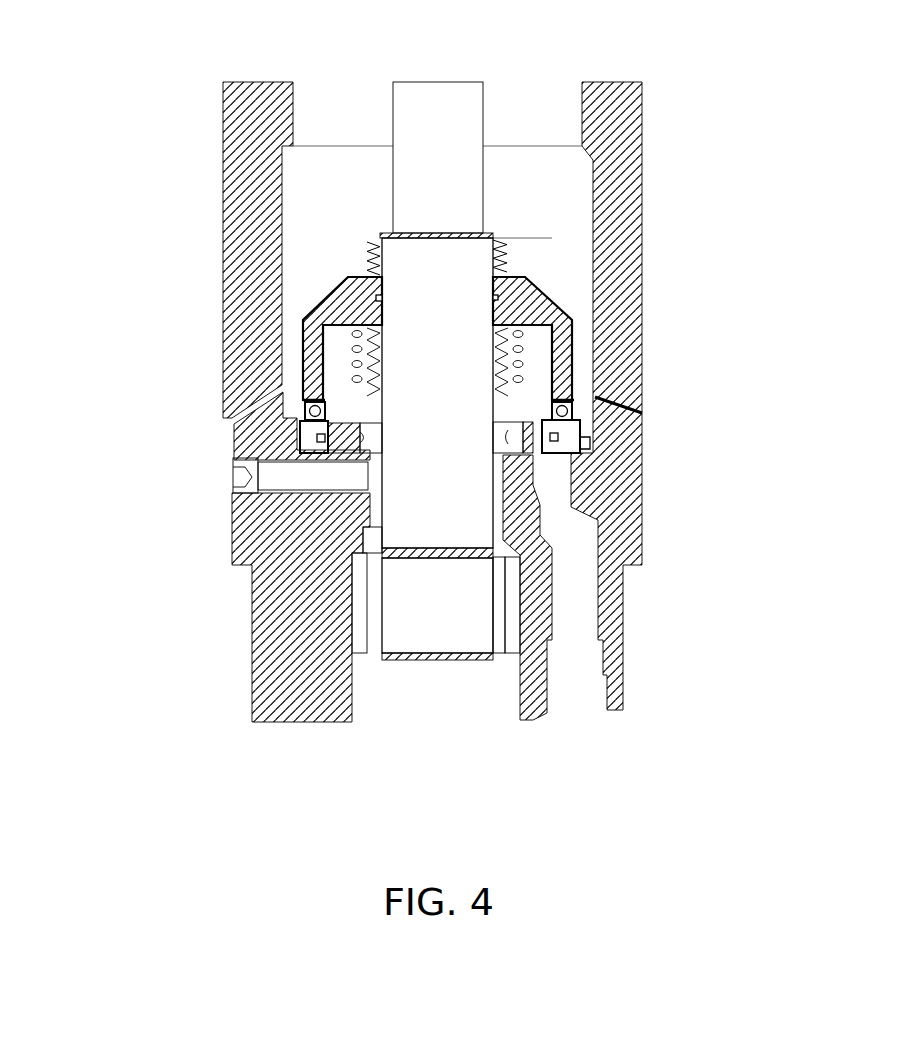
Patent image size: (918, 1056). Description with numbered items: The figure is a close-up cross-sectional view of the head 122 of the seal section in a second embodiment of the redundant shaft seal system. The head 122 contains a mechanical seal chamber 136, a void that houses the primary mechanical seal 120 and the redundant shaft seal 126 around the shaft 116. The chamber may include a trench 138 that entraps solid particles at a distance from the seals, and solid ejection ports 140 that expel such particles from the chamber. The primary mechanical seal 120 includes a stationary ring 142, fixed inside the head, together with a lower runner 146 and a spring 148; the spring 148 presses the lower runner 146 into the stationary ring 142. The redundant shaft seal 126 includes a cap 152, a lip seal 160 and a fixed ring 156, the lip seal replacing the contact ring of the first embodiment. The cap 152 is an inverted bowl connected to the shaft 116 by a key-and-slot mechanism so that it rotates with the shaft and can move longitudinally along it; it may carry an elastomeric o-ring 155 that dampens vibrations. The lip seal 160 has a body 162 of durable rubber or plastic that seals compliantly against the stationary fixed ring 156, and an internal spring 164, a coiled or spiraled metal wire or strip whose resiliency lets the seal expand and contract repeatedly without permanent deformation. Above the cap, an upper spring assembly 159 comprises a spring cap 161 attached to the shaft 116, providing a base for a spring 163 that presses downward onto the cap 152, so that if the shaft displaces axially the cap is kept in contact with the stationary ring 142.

The shaft 116 is at (440, 115).
The primary mechanical seal 120 is at (577, 398).
The head 122 is at (692, 218).
The redundant shaft seal 126 is at (562, 298).
The mechanical seal chamber 136 is at (535, 175).
The trench 138 is at (590, 443).
The solid ejection ports 140 is at (617, 407).
The stationary ring 142 is at (378, 450).
The lower runner 146 is at (372, 413).
The spring 148 is at (357, 380).
The cap 152 is at (337, 290).
The elastomeric o-ring 155 is at (377, 290).
The fixed ring 156 is at (306, 450).
The upper spring assembly 159 is at (538, 246).
The lip seal 160 is at (540, 376).
The spring cap 161 is at (380, 237).
The body 162 is at (302, 415).
The spring 163 is at (367, 242).
The internal spring 164 is at (310, 400).